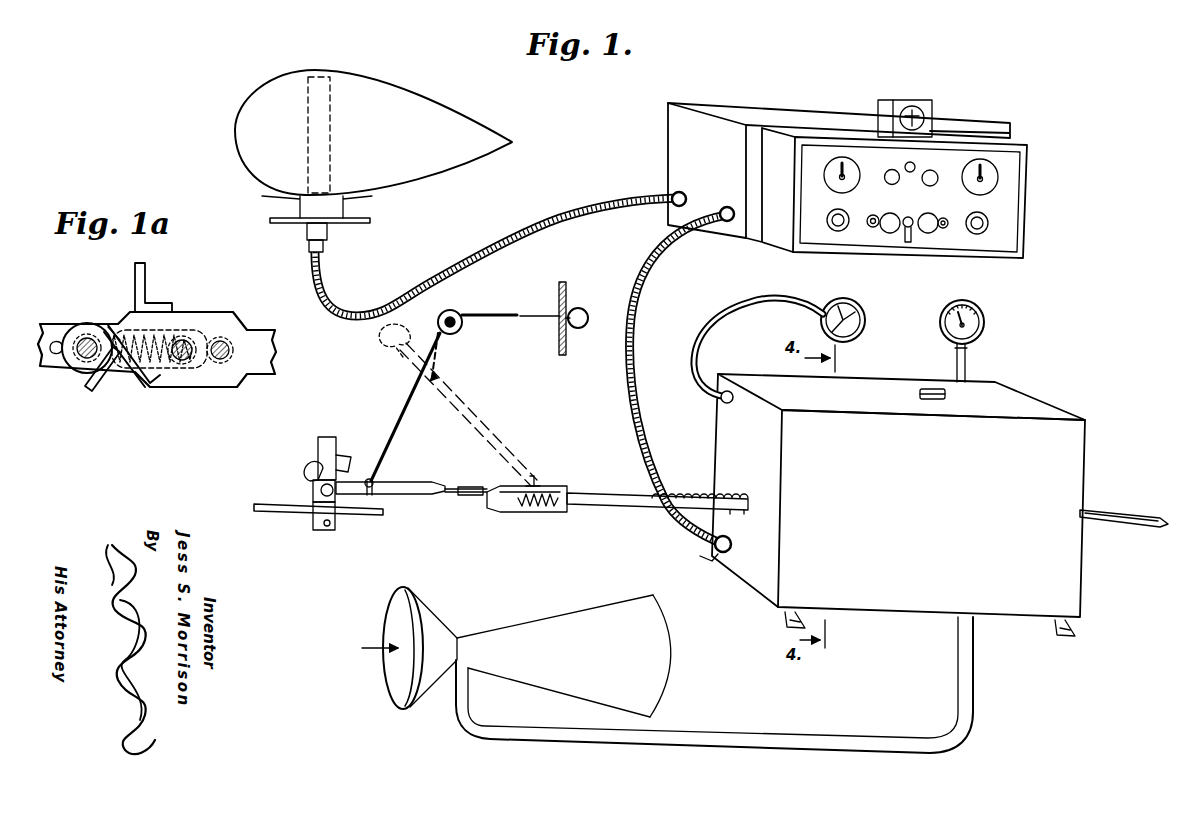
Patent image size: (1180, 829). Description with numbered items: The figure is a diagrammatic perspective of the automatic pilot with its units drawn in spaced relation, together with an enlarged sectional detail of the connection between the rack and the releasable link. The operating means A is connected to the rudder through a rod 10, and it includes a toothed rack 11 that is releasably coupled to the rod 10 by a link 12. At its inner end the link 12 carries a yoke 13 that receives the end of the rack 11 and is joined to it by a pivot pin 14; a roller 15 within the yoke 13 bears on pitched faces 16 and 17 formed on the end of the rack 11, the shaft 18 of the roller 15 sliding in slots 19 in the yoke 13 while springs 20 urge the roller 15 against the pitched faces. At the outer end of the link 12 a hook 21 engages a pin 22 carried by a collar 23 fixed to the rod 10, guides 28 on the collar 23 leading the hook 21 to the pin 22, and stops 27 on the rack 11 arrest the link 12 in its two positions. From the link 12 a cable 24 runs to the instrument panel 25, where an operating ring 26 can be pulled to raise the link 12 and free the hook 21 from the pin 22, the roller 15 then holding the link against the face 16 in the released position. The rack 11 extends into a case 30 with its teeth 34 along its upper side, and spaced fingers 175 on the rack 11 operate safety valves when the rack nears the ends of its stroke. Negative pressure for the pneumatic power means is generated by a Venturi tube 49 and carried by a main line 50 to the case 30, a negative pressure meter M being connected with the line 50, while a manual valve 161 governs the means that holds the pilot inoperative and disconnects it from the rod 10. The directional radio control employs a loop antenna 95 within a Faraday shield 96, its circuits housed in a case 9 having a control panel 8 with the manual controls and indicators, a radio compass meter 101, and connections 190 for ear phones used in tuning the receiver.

In FIG. 1, the control panel 8 is at (1003, 202).
In FIG. 1, the case 9 is at (683, 150).
In FIG. 1, the rudder rod 10 is at (277, 504).
In FIG. 1, the toothed rack 11 is at (652, 504).
In FIG. 1A, the toothed rack 11 is at (252, 338).
In FIG. 1, the link 12 is at (460, 407).
In FIG. 1, the yoke 13 is at (502, 512).
In FIG. 1A, the yoke 13 is at (52, 330).
In FIG. 1A, the pivot pin 14 is at (183, 362).
In FIG. 1A, the roller 15 is at (76, 368).
In FIG. 1A, the pitched face 16 is at (110, 325).
In FIG. 1A, the pitched face 17 is at (120, 362).
In FIG. 1A, the roller shaft 18 is at (89, 338).
In FIG. 1A, the slots 19 is at (70, 336).
In FIG. 1, the springs 20 is at (548, 509).
In FIG. 1A, the springs 20 is at (175, 330).
In FIG. 1, the hook 21 is at (310, 478).
In FIG. 1, the pin 22 is at (332, 498).
In FIG. 1, the collar 23 is at (323, 530).
In FIG. 1, the cable 24 is at (393, 428).
In FIG. 1, the instrument panel 25 is at (566, 302).
In FIG. 1, the operating ring 26 is at (582, 330).
In FIG. 1A, the stops 27 is at (143, 278).
In FIG. 1, the guides 28 is at (328, 440).
In FIG. 1, the case 30 is at (898, 505).
In FIG. 1, the rack teeth 34 is at (696, 492).
In FIG. 1, the Venturi tube 49 is at (516, 652).
In FIG. 1, the main negative pressure line 50 is at (965, 671).
In FIG. 1, the loop antenna 95 is at (330, 88).
In FIG. 1, the Faraday shield 96 is at (385, 88).
In FIG. 1, the meter 101 is at (912, 106).
In FIG. 1, the manual valve 161 is at (866, 318).
In FIG. 1, the fingers 175 is at (1112, 528).
In FIG. 1, the connections 190 is at (875, 228).
In FIG. 1, the negative pressure meter M is at (985, 314).
In FIG. 1, the operating means A is at (599, 488).